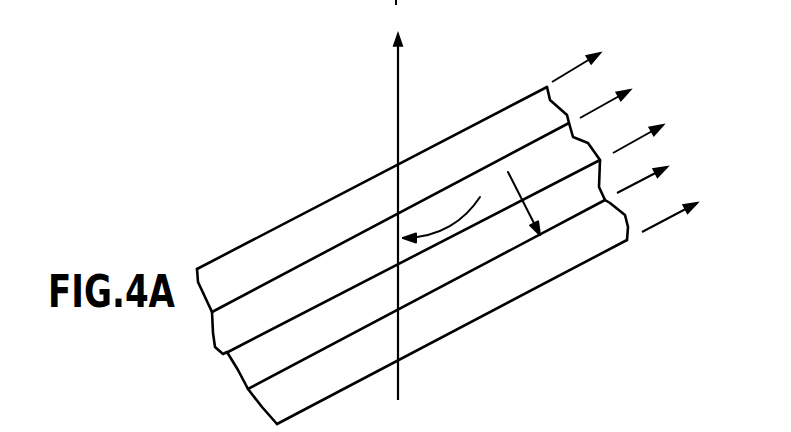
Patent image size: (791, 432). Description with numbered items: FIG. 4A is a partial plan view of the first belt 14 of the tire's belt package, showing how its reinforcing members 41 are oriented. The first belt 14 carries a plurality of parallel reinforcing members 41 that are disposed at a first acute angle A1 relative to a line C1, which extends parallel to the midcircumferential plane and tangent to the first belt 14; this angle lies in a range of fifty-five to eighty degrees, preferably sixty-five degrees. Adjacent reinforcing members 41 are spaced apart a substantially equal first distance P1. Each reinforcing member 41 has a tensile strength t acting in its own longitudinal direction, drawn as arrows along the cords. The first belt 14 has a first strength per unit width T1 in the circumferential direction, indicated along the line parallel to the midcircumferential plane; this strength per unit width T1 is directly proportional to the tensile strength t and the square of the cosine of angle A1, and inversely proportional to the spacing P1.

The first belt 14 is at (379, 230).
The reinforcing members 41 is at (484, 163).
The first acute angle A1 is at (318, 204).
The first strength per unit width T1 is at (372, 216).
The line C1 is at (398, 128).
The first distance P1 is at (568, 277).
The tensile strength t is at (624, 142).